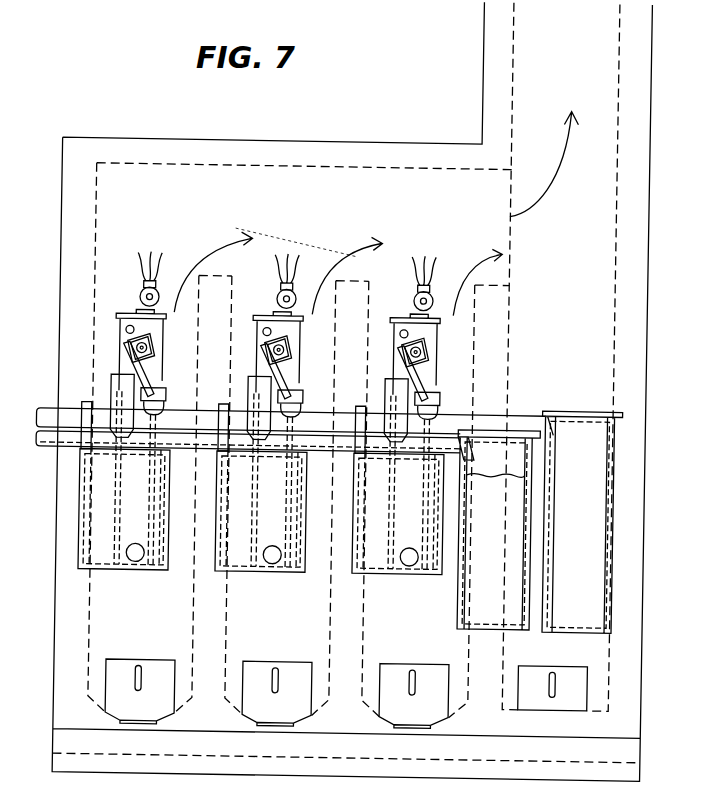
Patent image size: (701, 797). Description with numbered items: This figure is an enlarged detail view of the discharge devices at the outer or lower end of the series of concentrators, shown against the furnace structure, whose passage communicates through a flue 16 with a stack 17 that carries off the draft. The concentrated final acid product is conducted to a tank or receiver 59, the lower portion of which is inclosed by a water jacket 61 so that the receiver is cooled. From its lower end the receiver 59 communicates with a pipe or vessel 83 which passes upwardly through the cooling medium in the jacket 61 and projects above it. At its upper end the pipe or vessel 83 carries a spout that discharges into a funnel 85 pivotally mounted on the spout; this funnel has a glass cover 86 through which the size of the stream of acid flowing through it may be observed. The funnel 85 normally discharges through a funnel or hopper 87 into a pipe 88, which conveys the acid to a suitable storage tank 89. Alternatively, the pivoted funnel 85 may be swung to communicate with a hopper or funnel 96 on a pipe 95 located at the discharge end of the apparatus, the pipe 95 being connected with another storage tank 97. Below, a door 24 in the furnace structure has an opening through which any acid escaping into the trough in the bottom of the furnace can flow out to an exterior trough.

The flue 16 is at (338, 267).
The stack 17 is at (544, 142).
The tank or receiver 59 is at (436, 326).
The glass cover 86 is at (428, 357).
The funnel 85 is at (414, 377).
The funnel or hopper 87 is at (446, 398).
The hopper or funnel 96 is at (384, 395).
The pipe 88 is at (489, 418).
The pipe 95 is at (420, 457).
The pipe or vessel 83 is at (428, 523).
The water jacket 61 is at (383, 574).
The storage tank 97 is at (497, 530).
The storage tank 89 is at (581, 522).
The door 24 is at (346, 695).